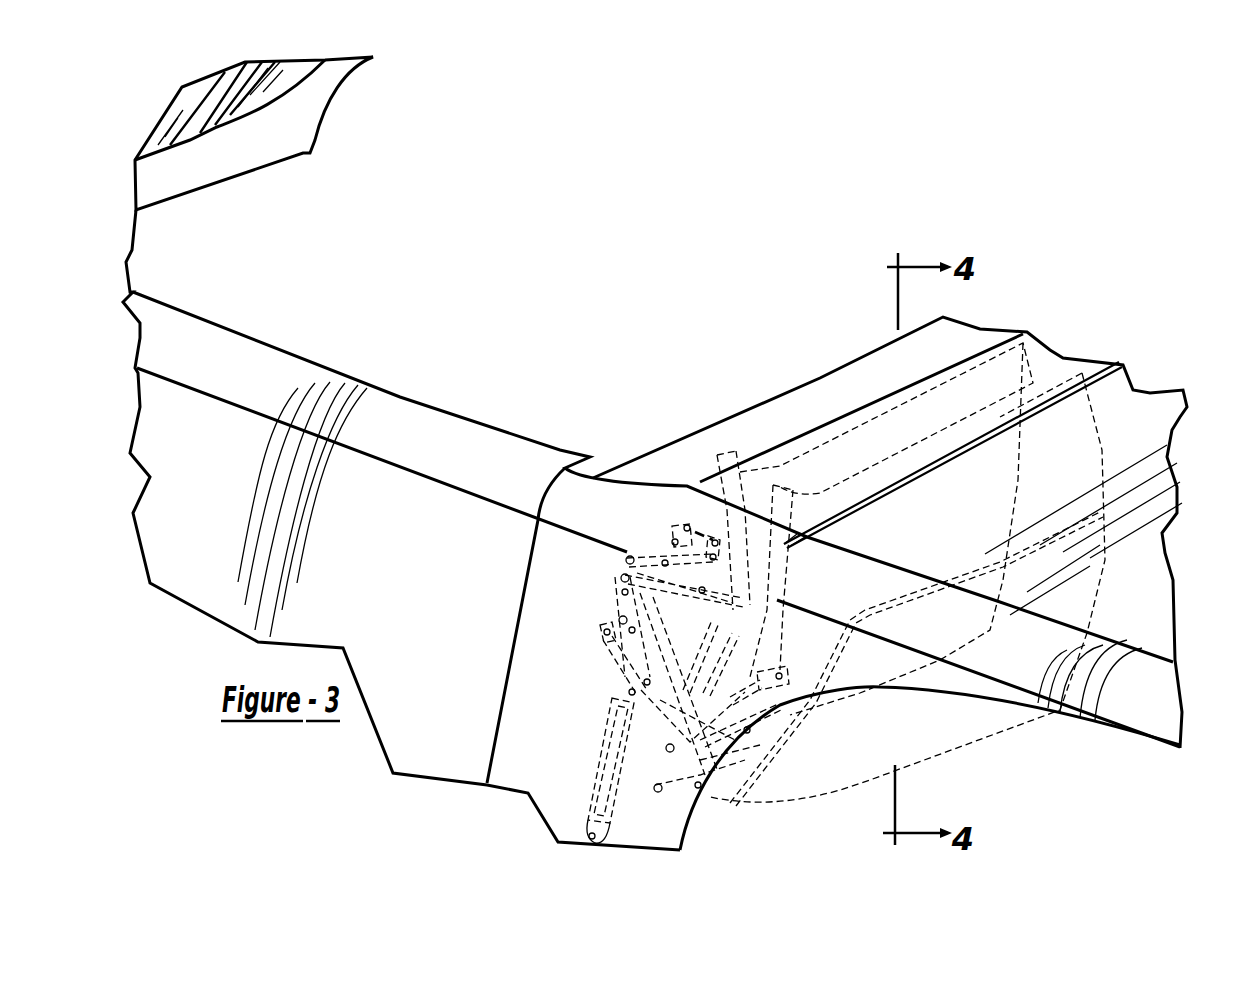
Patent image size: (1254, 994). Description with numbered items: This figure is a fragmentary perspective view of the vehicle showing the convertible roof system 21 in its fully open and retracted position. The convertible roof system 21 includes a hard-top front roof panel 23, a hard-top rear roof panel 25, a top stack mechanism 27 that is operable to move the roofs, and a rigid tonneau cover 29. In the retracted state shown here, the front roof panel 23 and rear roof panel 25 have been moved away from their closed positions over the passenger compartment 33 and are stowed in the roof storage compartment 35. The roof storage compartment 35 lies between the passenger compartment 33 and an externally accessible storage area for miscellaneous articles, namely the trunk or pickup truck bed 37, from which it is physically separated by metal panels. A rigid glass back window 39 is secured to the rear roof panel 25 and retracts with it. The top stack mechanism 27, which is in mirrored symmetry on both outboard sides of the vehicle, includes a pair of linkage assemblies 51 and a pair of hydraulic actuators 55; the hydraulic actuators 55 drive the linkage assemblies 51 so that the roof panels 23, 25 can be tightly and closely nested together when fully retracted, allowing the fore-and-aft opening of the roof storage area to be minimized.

The convertible roof system 21 is at (598, 297).
The hard-top front roof panel 23 is at (907, 425).
The hard-top rear roof panel 25 is at (1103, 459).
The top stack mechanism 27 is at (587, 585).
The rigid tonneau cover 29 is at (1048, 362).
The passenger compartment 33 is at (494, 252).
The roof storage compartment 35 is at (669, 814).
The trunk or pickup truck bed 37 is at (1137, 622).
The back window 39 is at (928, 730).
The linkage assembly 51 is at (615, 655).
The hydraulic actuator 55 is at (598, 755).